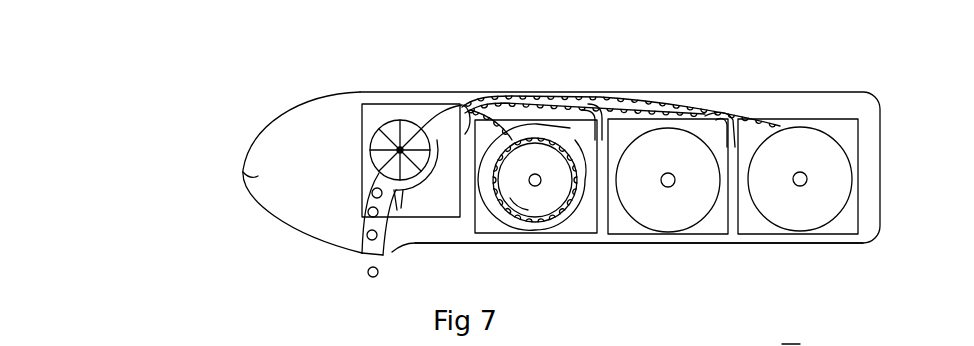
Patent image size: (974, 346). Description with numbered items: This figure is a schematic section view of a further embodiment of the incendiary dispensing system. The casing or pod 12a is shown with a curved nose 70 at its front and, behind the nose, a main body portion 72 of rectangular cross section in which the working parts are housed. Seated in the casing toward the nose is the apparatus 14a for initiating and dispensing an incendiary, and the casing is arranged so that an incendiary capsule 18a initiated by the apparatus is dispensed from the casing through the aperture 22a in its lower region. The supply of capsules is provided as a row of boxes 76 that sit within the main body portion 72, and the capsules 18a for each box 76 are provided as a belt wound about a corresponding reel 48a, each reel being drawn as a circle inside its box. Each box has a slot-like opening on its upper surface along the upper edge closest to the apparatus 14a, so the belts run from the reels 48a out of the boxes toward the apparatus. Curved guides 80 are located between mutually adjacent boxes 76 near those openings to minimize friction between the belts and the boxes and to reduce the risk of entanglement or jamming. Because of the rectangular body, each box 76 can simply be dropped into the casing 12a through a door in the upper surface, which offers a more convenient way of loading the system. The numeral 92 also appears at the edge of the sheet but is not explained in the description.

The casing or pod 12a is at (297, 200).
The curved nose 70 is at (237, 172).
The aperture 22a is at (362, 253).
The incendiary capsule 18a is at (368, 273).
The apparatus for initiating and dispensing an incendiary 14a is at (420, 103).
The curved guides 80 is at (600, 93).
The reel 48a is at (565, 225).
The box 76 is at (583, 225).
The main body portion 72 is at (704, 245).
The element 92 is at (846, 337).